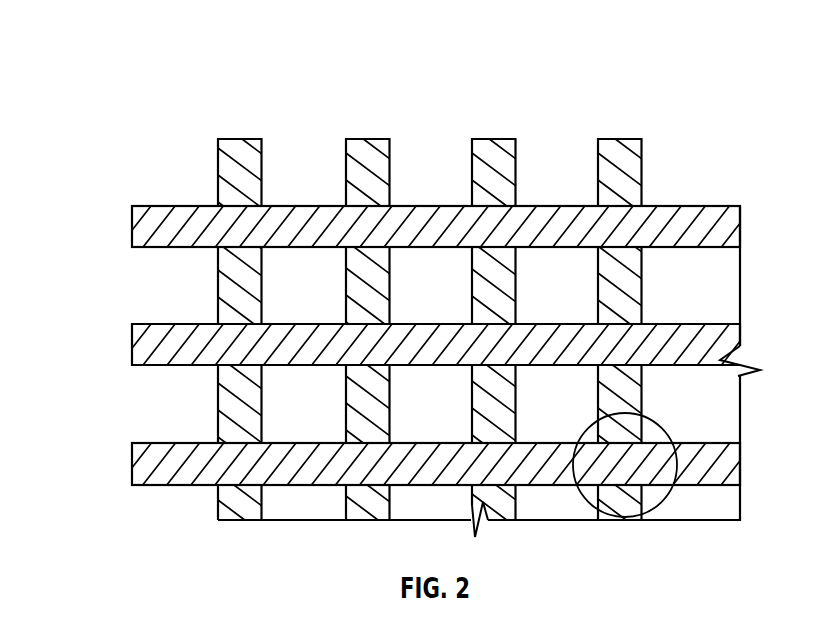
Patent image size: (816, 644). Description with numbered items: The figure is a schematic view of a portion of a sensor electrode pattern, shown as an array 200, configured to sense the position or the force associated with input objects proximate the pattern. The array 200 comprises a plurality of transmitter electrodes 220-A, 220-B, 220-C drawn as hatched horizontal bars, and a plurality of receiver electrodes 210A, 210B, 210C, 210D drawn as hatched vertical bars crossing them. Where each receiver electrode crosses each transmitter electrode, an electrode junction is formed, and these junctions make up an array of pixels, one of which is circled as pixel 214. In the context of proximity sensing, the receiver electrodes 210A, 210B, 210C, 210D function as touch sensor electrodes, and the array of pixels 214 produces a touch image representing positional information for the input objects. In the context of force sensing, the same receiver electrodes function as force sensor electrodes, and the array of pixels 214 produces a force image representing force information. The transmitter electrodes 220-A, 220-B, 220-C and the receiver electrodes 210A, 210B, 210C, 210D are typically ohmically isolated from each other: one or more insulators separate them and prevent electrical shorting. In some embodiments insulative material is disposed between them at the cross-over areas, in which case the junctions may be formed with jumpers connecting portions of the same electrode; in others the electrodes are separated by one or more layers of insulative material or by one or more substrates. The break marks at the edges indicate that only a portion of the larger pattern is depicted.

The pattern (array) 200 is at (138, 75).
The receiver electrode 210A is at (237, 139).
The receiver electrode 210B is at (367, 139).
The receiver electrode 210C is at (493, 139).
The receiver electrode 210D is at (620, 139).
The transmitter electrode 220-A is at (132, 228).
The transmitter electrode 220-B is at (132, 345).
The transmitter electrode 220-C is at (132, 465).
The pixel 214 is at (658, 425).